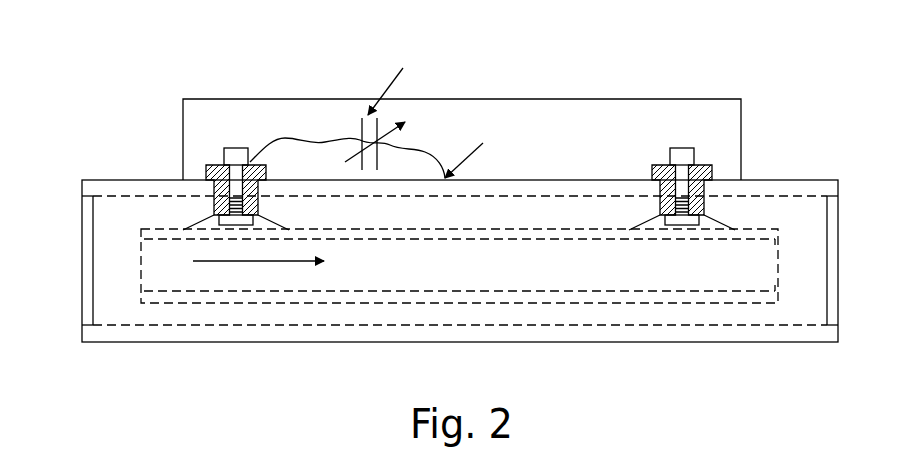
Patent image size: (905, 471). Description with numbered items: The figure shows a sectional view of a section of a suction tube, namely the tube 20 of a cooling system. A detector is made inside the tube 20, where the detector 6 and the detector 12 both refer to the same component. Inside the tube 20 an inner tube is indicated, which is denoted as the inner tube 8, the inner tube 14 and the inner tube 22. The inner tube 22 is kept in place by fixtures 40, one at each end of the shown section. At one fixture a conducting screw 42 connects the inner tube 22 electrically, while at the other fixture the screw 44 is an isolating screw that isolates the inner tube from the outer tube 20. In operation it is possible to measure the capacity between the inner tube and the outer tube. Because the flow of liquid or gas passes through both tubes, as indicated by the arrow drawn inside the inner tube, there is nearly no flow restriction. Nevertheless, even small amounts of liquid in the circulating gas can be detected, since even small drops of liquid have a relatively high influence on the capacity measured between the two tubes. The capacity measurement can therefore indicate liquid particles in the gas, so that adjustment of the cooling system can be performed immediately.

The detector 6 is at (125, 196).
The inner tube 8 is at (160, 238).
The detector 12 is at (115, 326).
The inner tube 14 is at (230, 304).
The tube 20 is at (523, 178).
The inner tube 22 is at (583, 296).
The fixtures 40 is at (206, 170).
The conducting screw 42 is at (236, 148).
The isolating screw 44 is at (683, 148).